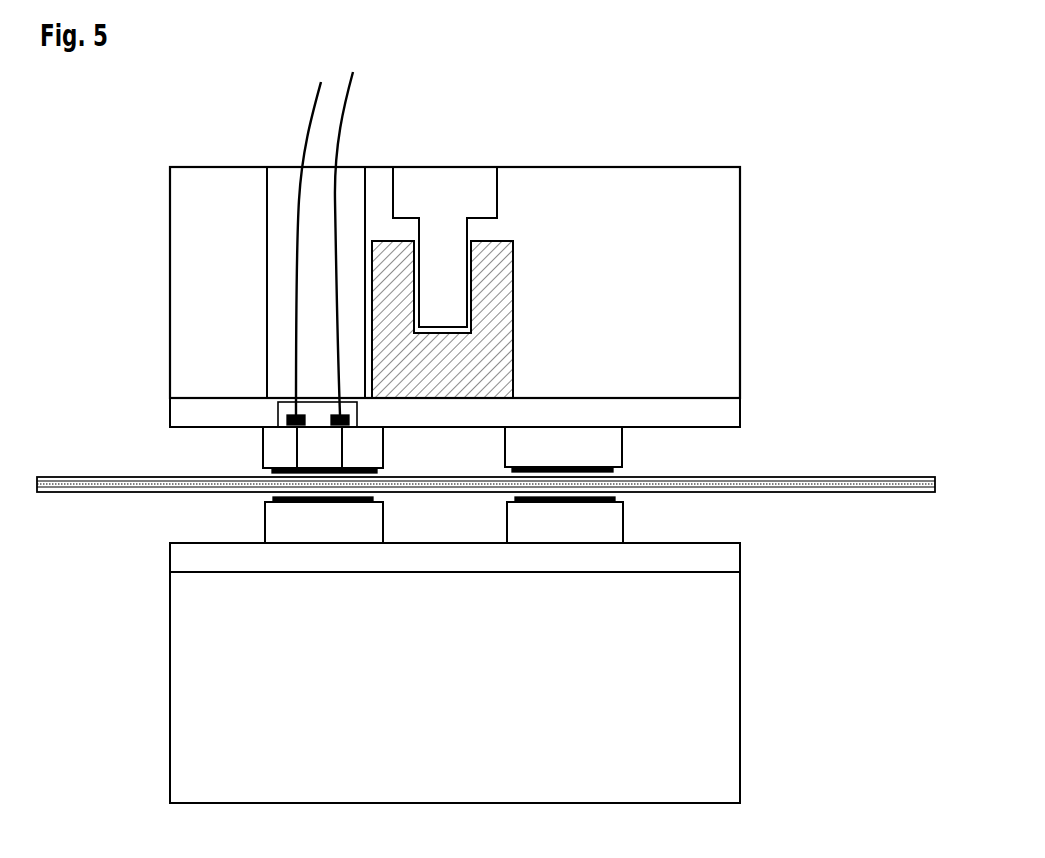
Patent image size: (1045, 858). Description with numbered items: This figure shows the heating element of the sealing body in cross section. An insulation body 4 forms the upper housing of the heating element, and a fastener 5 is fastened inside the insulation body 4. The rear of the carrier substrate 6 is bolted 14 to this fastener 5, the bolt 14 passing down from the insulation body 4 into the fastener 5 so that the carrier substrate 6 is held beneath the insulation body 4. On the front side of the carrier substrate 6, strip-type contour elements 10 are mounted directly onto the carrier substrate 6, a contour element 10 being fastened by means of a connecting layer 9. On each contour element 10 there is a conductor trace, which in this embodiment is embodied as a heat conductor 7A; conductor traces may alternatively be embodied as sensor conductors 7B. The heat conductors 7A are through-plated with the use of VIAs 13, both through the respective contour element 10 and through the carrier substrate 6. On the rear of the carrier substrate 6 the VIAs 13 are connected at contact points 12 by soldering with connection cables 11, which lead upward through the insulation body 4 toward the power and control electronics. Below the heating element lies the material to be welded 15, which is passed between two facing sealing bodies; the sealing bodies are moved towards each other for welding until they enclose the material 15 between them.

The insulation body 4 is at (737, 283).
The fastener 5 is at (505, 304).
The carrier substrate 6 is at (737, 409).
The heat conductor 7A is at (611, 470).
The sensor conductor 7B is at (444, 499).
The connecting layer 9 is at (513, 396).
The contour element 10 is at (620, 446).
The connection cable 11 is at (296, 232).
The contact point 12 is at (288, 411).
The VIA 13 is at (297, 455).
The bolt 14 is at (457, 230).
The material to be welded 15 is at (476, 492).